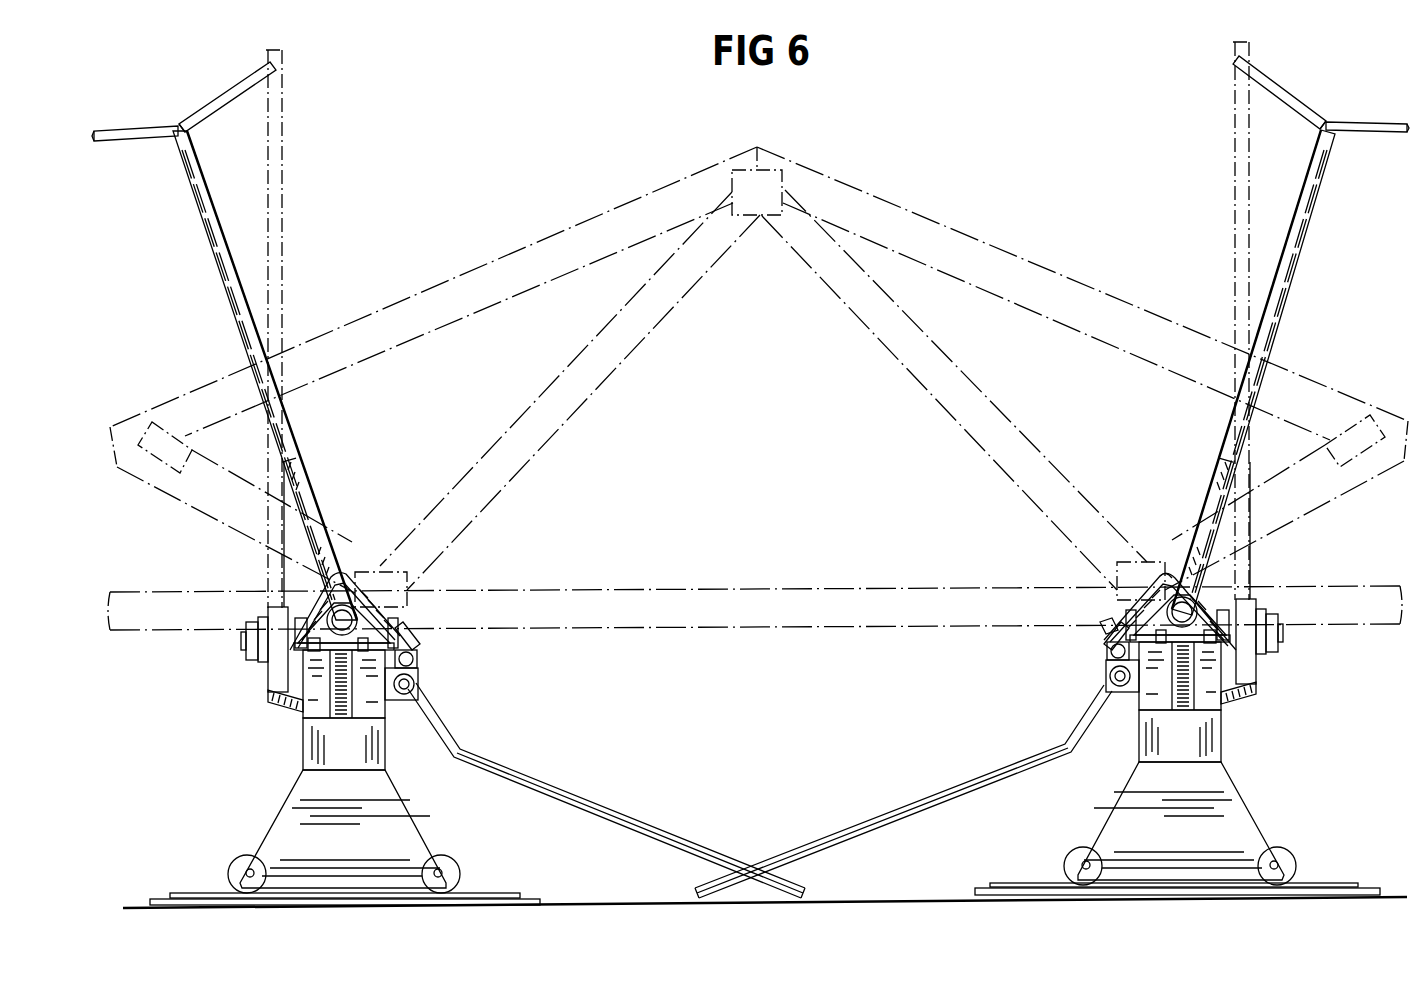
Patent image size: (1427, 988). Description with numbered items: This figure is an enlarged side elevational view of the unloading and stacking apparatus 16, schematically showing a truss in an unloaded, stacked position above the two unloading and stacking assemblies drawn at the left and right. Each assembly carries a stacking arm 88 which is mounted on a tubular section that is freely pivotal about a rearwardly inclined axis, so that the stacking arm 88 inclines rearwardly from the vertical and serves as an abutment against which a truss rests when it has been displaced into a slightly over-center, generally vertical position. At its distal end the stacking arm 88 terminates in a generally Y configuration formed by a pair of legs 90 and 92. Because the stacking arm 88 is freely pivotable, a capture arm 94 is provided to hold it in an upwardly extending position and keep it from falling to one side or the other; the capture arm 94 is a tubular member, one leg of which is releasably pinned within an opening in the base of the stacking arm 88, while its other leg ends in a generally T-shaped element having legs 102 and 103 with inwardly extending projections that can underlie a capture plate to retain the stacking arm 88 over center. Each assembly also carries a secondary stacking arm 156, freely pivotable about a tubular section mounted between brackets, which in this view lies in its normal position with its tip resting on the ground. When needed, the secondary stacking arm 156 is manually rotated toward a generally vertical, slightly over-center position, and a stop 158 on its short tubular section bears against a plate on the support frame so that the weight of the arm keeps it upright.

The unloading and stacking apparatus 16 is at (906, 713).
The stacking arm 88 is at (1288, 277).
The leg 90 is at (1280, 88).
The leg 92 is at (1387, 122).
The capture arm 94 is at (1162, 568).
The leg 102 is at (1118, 622).
The leg 103 is at (1108, 626).
The secondary stacking arm 156 is at (1077, 713).
The stop 158 is at (1100, 630).